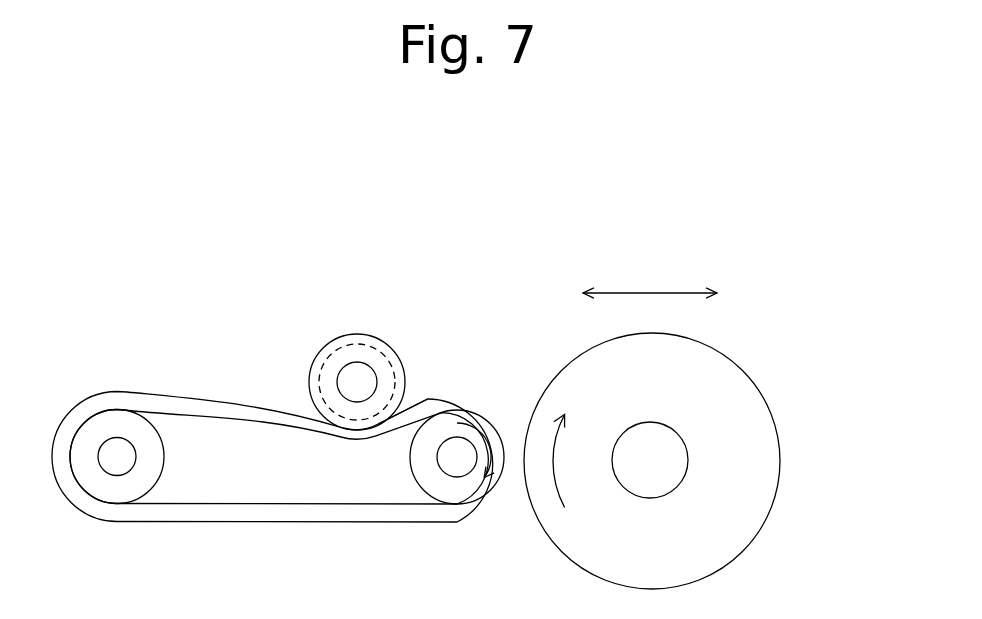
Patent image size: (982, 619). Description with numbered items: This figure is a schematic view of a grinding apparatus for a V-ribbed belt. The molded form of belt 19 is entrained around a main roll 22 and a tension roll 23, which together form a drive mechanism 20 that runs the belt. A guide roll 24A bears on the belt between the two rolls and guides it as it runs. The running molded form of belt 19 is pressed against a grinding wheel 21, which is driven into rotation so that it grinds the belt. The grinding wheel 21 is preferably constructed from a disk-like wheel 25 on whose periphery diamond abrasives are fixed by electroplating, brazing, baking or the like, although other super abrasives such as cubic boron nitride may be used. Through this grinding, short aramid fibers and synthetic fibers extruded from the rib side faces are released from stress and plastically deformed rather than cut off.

The molded form of belt 19 is at (444, 402).
The drive mechanism 20 is at (220, 392).
The grinding wheel 21 is at (773, 390).
The main roll 22 is at (476, 425).
The tension roll 23 is at (118, 421).
The guide roll 24A is at (358, 352).
The disk-like wheel 25 is at (759, 452).